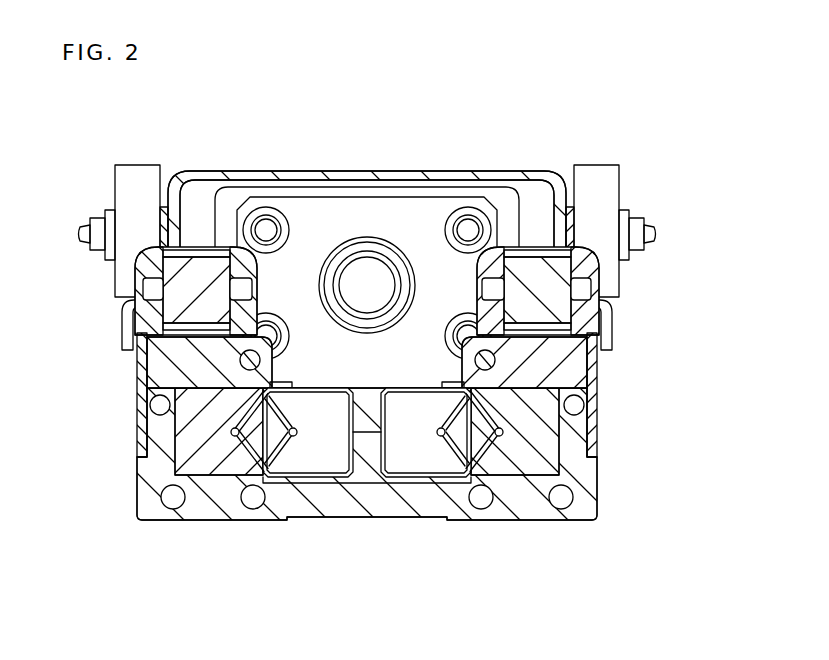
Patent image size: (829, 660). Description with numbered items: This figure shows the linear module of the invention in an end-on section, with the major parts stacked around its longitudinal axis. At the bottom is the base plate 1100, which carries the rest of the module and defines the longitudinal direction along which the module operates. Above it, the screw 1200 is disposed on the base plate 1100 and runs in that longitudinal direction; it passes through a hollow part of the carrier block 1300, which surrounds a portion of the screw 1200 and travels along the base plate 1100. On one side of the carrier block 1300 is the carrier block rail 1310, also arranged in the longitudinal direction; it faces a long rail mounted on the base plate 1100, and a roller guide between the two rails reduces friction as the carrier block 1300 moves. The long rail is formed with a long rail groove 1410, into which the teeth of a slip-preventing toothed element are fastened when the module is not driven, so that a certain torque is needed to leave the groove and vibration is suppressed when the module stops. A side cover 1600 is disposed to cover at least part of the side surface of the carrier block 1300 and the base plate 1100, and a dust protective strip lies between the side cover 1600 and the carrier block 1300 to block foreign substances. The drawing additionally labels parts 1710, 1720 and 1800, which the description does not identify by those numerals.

The base plate 1100 is at (529, 492).
The screw 1200 is at (378, 282).
The carrier block 1300 is at (379, 208).
The carrier block rail 1310 is at (403, 457).
The long rail groove 1410 is at (523, 440).
The side cover 1600 is at (592, 380).
The bearing block 1710 is at (551, 272).
The nut 1720 is at (584, 292).
The cover 1800 is at (309, 170).